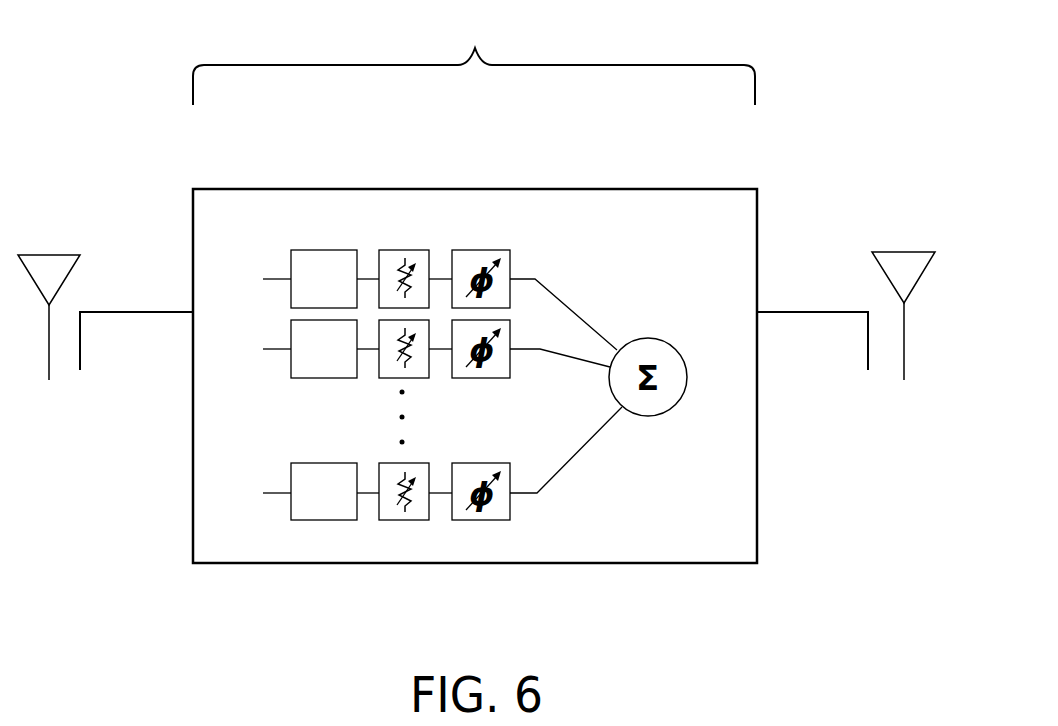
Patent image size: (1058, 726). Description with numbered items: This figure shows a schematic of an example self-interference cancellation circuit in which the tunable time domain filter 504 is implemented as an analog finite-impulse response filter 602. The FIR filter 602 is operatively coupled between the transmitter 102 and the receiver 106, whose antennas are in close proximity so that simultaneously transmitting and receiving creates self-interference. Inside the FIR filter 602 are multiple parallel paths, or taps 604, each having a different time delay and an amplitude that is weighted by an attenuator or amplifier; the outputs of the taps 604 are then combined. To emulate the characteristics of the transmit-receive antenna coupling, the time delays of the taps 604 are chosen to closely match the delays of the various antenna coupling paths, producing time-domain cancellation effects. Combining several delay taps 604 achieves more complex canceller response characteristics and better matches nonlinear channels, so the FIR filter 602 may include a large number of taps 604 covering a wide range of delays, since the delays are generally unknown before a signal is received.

The tunable time domain filter 504 is at (474, 56).
The transmitter 102 is at (56, 220).
The receiver 106 is at (900, 208).
The analog finite-impulse response (FIR) filter 602 is at (620, 189).
The taps 604 is at (323, 250).